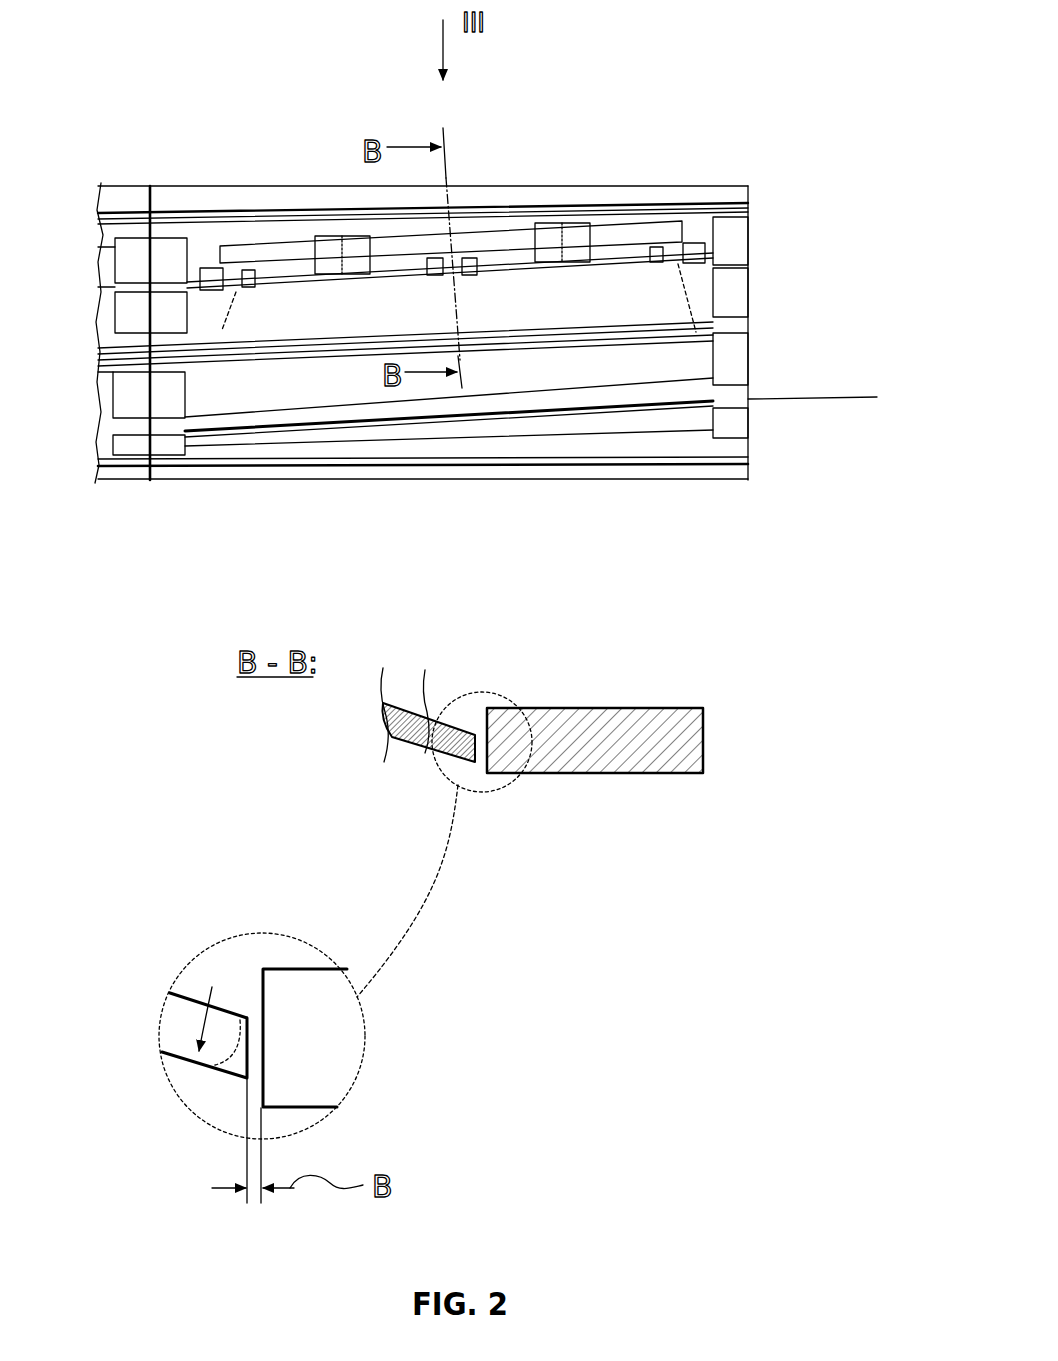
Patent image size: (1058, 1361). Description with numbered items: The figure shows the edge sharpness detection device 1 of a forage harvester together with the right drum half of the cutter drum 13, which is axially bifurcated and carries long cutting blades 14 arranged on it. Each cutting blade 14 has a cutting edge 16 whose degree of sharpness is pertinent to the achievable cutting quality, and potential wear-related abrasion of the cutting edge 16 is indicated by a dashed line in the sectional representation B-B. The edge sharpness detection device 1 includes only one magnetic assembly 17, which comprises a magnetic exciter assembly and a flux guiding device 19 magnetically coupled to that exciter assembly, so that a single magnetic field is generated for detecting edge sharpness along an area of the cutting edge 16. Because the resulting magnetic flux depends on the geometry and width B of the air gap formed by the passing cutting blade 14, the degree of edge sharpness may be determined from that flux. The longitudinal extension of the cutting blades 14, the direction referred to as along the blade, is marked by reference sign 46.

The edge sharpness detection device 1 is at (685, 98).
The cutter drum 13 is at (767, 449).
The cutting blade 14 is at (748, 320).
The cutting edge 16 is at (250, 1077).
The magnetic assembly 17 is at (509, 222).
The flux guiding device 19 is at (670, 226).
The longitudinal extension of the cutting blades 46 is at (823, 397).